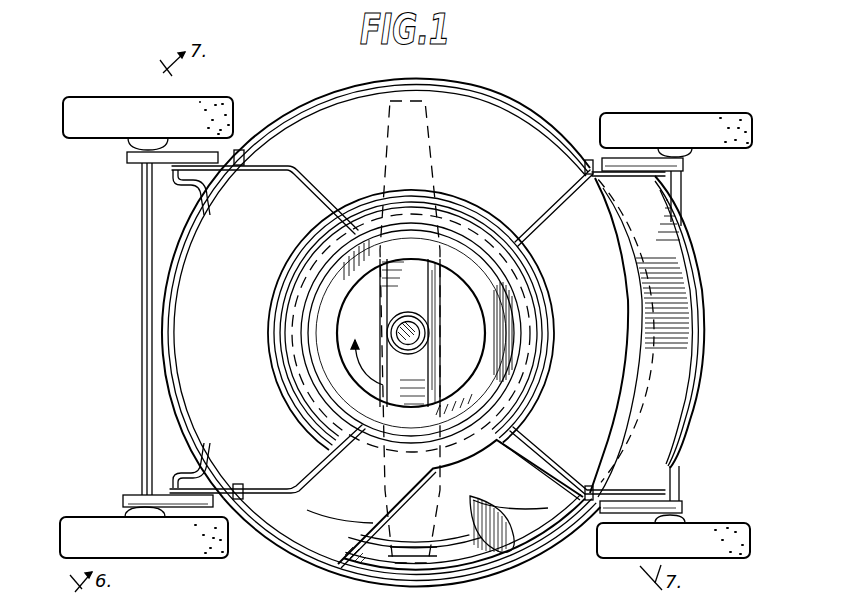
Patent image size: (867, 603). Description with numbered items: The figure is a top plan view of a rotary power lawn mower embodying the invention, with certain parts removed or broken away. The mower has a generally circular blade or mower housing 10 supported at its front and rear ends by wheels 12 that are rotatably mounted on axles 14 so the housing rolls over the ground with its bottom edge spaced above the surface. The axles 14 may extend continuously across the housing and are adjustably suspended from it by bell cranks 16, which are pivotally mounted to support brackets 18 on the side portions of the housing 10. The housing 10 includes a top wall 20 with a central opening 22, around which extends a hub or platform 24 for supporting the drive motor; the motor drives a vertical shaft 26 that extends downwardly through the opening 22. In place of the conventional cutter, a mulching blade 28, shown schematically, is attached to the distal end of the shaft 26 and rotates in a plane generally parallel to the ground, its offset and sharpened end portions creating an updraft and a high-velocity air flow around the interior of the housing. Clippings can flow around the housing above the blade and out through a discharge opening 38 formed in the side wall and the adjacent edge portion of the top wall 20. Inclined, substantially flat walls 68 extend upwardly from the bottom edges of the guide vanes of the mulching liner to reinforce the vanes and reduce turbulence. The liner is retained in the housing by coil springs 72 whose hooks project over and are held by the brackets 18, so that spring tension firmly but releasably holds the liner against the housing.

The mower housing 10 is at (504, 92).
The wheels 12 is at (76, 126).
The axles 14 is at (141, 230).
The bell cranks 16 is at (128, 160).
The support brackets 18 is at (195, 186).
The top wall 20 is at (208, 325).
The central opening 22 is at (492, 326).
The hub or platform 24 is at (490, 304).
The vertical shaft 26 is at (416, 330).
The mulching blade 28 is at (457, 374).
The discharge opening 38 is at (547, 508).
The inclined flat wall 68 is at (506, 530).
The coil springs 72 is at (258, 162).